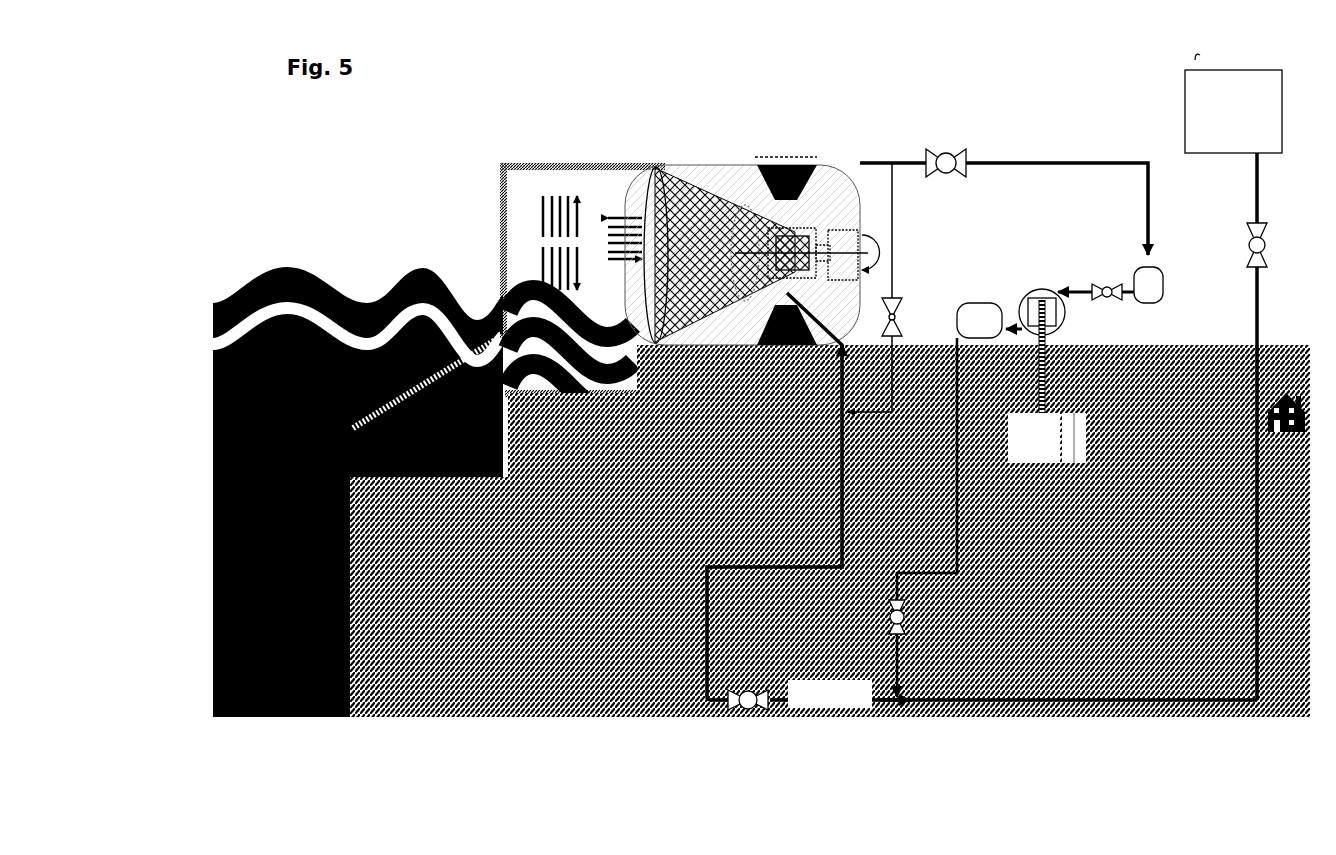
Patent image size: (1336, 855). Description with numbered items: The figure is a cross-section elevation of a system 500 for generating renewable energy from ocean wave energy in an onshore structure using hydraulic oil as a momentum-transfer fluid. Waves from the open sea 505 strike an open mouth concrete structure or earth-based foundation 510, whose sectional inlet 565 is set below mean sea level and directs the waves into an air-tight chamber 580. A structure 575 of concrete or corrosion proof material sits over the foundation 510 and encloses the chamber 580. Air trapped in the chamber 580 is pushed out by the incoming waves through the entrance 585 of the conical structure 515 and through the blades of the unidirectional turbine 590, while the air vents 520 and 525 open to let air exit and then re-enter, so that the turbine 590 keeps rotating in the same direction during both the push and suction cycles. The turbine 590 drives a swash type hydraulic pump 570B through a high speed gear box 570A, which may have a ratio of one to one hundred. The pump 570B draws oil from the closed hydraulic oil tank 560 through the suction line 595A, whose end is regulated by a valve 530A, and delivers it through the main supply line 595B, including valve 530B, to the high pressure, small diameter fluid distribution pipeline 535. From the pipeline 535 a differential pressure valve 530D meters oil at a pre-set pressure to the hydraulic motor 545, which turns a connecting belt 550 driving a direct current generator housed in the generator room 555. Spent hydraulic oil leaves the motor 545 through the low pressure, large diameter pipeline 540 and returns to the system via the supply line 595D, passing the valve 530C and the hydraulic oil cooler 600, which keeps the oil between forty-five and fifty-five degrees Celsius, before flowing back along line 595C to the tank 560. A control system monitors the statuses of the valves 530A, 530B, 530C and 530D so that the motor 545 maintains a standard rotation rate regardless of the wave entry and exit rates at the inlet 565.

The system 500 is at (1080, 68).
The sea 505 is at (358, 492).
The concrete structure or earth-based foundation 510 is at (830, 531).
The conical structure 515 is at (665, 165).
The air vent 520 is at (783, 165).
The air vent 525 is at (785, 372).
The valve 530A is at (897, 302).
The valve 530B is at (963, 153).
The valve 530C is at (744, 690).
The differential pressure valve 530D is at (1107, 288).
The fluid distribution pipeline 535 is at (1165, 272).
The low pressure pipeline 540 is at (980, 302).
The hydraulic motor 545 is at (1062, 322).
The connecting belt 550 is at (1046, 396).
The generator room 555 is at (1047, 438).
The hydraulic oil tank 560 is at (1233, 103).
The sectional inlet 565 is at (375, 450).
The high speed gear box 570A is at (784, 222).
The hydraulic pump 570B is at (845, 227).
The structure 575 is at (503, 205).
The air-tight chamber 580 is at (527, 258).
The entrance 585 is at (627, 213).
The unidirectional turbine 590 is at (733, 295).
The suction line 595A is at (845, 513).
The supply line 595B is at (1060, 163).
The supply line 595C is at (1257, 500).
The supply line 595D is at (955, 553).
The hydraulic oil cooler 600 is at (830, 694).